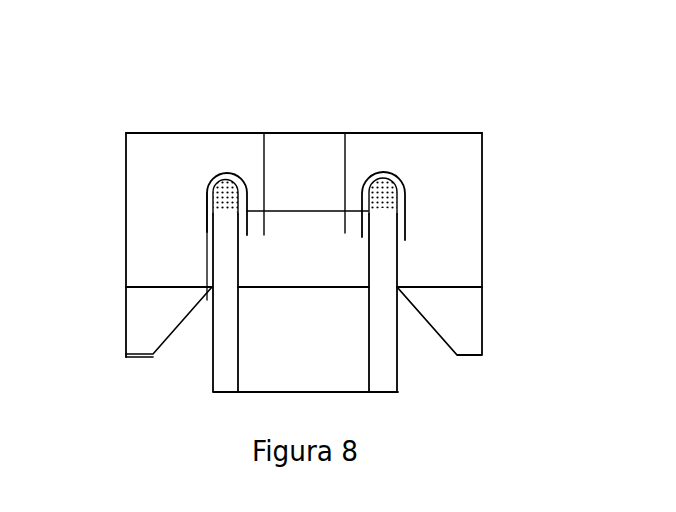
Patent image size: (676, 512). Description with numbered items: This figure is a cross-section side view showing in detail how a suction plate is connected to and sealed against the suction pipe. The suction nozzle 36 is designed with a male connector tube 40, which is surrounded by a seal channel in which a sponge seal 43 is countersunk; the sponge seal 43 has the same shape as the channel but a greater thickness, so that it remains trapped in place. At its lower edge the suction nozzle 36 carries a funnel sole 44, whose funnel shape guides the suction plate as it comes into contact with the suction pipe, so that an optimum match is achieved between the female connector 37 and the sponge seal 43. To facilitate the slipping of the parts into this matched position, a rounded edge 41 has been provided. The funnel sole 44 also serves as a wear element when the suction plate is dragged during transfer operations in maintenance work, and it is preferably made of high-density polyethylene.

The suction nozzle 36 is at (138, 232).
The female connector 37 is at (222, 368).
The male connector tube 40 is at (322, 157).
The rounded edge 41 is at (213, 226).
The sponge seal 43 is at (397, 172).
The funnel sole 44 is at (150, 325).